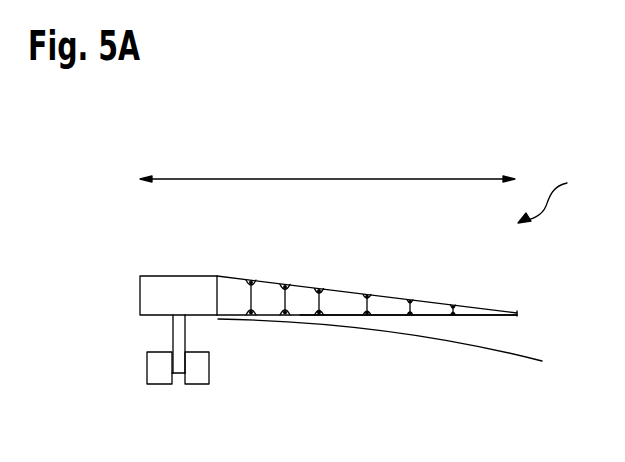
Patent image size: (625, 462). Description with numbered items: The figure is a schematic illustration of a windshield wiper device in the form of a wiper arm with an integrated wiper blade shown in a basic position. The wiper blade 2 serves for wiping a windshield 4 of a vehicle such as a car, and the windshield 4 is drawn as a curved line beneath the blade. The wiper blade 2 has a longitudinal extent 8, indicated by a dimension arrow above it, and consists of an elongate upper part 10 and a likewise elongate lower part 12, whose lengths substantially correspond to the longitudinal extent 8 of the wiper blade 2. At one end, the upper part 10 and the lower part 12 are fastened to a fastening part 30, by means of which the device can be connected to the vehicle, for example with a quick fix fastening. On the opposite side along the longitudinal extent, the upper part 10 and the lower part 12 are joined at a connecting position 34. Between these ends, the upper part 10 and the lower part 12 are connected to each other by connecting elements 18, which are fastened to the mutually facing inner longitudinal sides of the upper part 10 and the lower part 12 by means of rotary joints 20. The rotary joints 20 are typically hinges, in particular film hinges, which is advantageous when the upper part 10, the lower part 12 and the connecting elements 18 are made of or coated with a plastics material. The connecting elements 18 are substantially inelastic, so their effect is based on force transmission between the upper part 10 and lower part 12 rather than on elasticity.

The wiper blade 2 is at (553, 196).
The windshield 4 is at (495, 355).
The longitudinal extent 8 is at (314, 179).
The upper part 10 is at (478, 315).
The lower part 12 is at (478, 318).
The connecting elements 18 is at (285, 290).
The rotary joints 20 is at (252, 281).
The fastening part 30 is at (147, 296).
The connecting position 34 is at (517, 313).